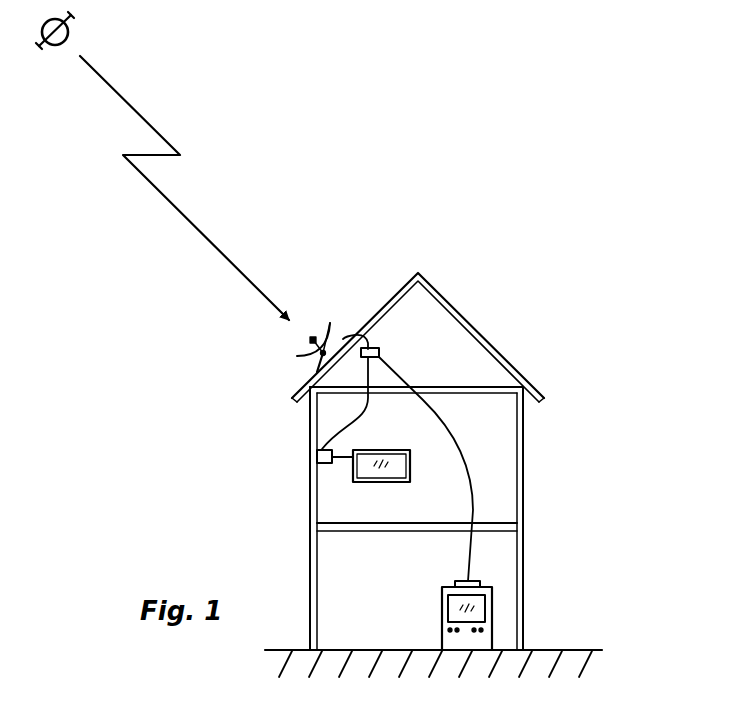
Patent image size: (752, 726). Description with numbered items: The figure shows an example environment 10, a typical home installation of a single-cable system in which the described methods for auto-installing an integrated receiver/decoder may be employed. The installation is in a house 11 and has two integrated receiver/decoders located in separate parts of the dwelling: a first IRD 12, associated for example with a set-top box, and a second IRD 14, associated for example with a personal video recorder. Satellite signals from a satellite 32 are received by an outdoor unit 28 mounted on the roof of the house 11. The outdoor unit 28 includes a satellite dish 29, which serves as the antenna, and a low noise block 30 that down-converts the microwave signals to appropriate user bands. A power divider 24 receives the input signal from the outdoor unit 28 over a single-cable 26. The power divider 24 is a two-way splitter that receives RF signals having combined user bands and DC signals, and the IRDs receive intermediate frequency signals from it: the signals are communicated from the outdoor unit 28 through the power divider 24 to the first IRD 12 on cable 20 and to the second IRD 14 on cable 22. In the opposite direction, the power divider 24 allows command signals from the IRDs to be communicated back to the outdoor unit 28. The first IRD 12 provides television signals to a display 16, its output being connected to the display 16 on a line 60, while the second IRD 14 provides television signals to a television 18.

The environment 10 is at (559, 325).
The house 11 is at (521, 375).
The IRD #1 12 is at (331, 447).
The IRD #2 14 is at (457, 578).
The display 16 is at (399, 448).
The television 18 is at (438, 622).
The cable 20 is at (356, 412).
The cable 22 is at (464, 442).
The power divider 24 is at (382, 352).
The single-cable 26 is at (372, 339).
The outdoor unit 28 is at (296, 366).
The satellite dish 29 is at (306, 352).
The low noise block 30 is at (316, 337).
The satellite 32 is at (68, 37).
The line 60 is at (350, 459).